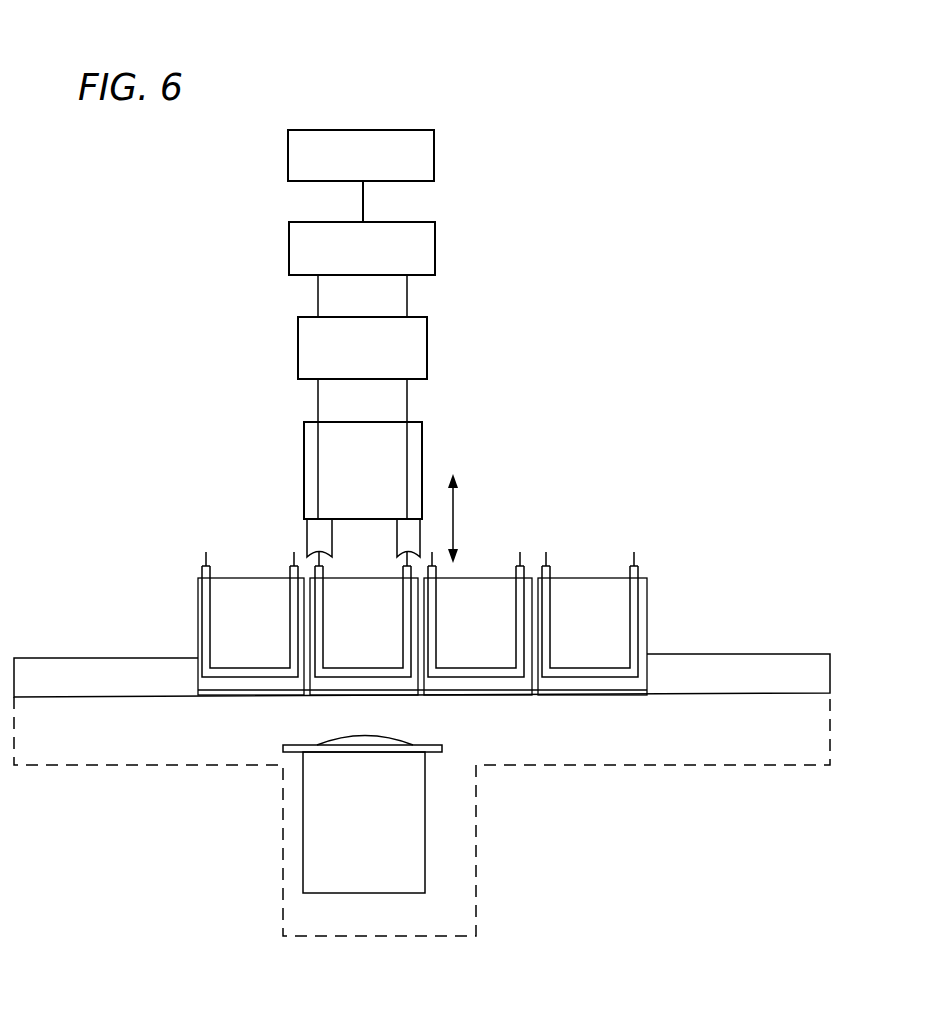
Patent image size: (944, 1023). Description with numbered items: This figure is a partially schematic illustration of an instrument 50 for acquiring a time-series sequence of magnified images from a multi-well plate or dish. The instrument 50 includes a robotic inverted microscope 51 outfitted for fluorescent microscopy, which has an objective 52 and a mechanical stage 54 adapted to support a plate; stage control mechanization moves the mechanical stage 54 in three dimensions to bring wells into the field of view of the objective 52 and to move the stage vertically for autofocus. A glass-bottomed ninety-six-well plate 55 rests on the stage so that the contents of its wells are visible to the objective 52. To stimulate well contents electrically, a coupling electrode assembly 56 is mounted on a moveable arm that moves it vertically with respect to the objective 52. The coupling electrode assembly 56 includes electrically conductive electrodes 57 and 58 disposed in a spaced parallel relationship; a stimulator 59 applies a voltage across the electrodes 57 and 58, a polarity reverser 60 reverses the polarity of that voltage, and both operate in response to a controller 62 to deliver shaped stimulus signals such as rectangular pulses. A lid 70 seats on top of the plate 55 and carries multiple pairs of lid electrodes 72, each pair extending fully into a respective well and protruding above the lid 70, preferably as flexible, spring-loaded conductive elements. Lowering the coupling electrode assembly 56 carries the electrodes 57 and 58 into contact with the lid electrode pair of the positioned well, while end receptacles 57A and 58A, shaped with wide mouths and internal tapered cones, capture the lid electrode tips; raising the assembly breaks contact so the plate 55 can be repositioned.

The instrument 50 is at (590, 300).
The robotic inverted microscope 51 is at (283, 838).
The objective 52 is at (341, 873).
The mechanical stage 54 is at (751, 654).
The glass-bottomed 96-well plate 55 is at (646, 598).
The coupling electrode assembly 56 is at (282, 415).
The electrode 57 is at (320, 440).
The end receptacle 57A is at (332, 537).
The electrode 58 is at (424, 437).
The end receptacle 58A is at (420, 533).
The stimulator 59 is at (435, 247).
The polarity reverser 60 is at (427, 345).
The controller 62 is at (434, 152).
The lid 70 is at (478, 578).
The lid electrodes 72 is at (280, 571).